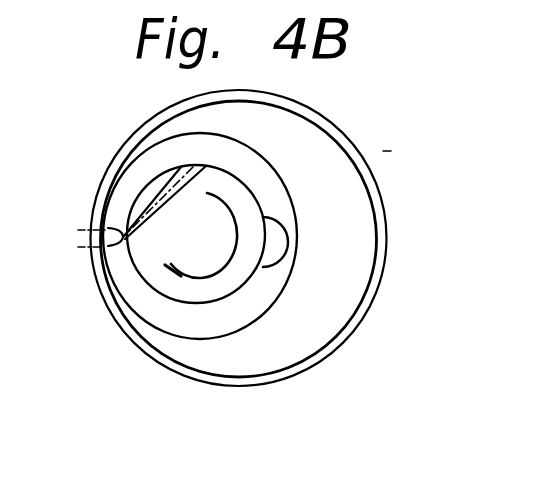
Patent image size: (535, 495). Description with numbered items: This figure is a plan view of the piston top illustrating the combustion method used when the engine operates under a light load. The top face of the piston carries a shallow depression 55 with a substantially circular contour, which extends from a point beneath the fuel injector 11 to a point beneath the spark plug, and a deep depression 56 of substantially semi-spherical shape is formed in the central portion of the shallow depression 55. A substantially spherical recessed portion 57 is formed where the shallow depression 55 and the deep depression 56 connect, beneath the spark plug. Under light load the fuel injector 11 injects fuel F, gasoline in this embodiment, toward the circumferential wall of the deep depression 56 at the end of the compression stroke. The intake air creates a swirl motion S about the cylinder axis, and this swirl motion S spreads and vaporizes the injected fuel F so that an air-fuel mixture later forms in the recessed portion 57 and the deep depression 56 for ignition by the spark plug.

The fuel injector 11 is at (88, 229).
The shallow depression 55 is at (168, 320).
The deep depression 56 is at (139, 264).
The recessed portion 57 is at (281, 240).
The swirl motion S is at (229, 212).
The fuel F is at (160, 197).